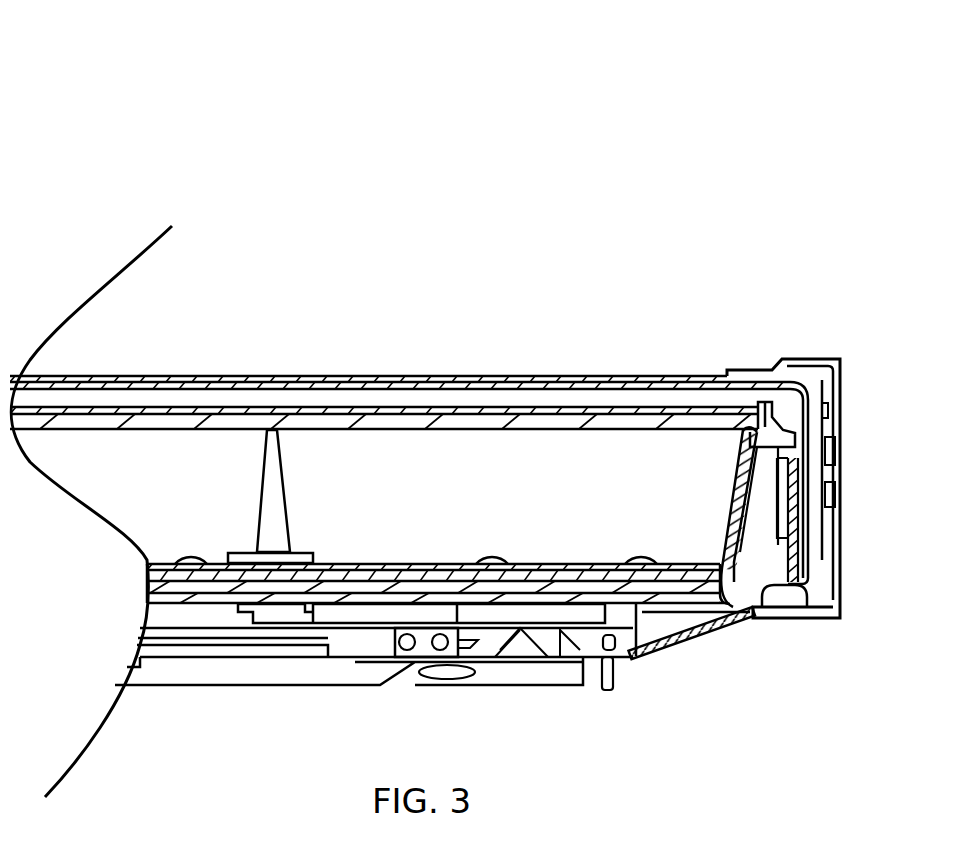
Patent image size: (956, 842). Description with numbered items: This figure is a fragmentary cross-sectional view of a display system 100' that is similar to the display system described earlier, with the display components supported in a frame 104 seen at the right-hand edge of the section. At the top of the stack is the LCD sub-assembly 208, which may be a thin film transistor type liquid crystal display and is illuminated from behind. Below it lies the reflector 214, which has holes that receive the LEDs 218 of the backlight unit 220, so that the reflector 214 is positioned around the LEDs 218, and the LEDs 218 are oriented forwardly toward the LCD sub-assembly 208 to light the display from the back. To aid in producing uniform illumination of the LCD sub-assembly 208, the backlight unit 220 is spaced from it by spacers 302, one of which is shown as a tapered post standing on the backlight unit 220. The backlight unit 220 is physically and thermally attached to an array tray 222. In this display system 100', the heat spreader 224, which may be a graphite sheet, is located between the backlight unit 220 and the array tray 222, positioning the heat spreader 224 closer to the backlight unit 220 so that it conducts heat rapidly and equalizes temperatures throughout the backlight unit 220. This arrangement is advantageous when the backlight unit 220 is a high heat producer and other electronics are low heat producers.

The display system 100' is at (91, 408).
The LCD sub-assembly 208 is at (487, 373).
The spacers 302 is at (274, 492).
The frame 104 is at (841, 405).
The reflector 214 is at (375, 565).
The LEDs 218 is at (492, 558).
The backlight unit 220 is at (210, 575).
The array tray 222 is at (613, 597).
The heat spreader 224 is at (705, 587).